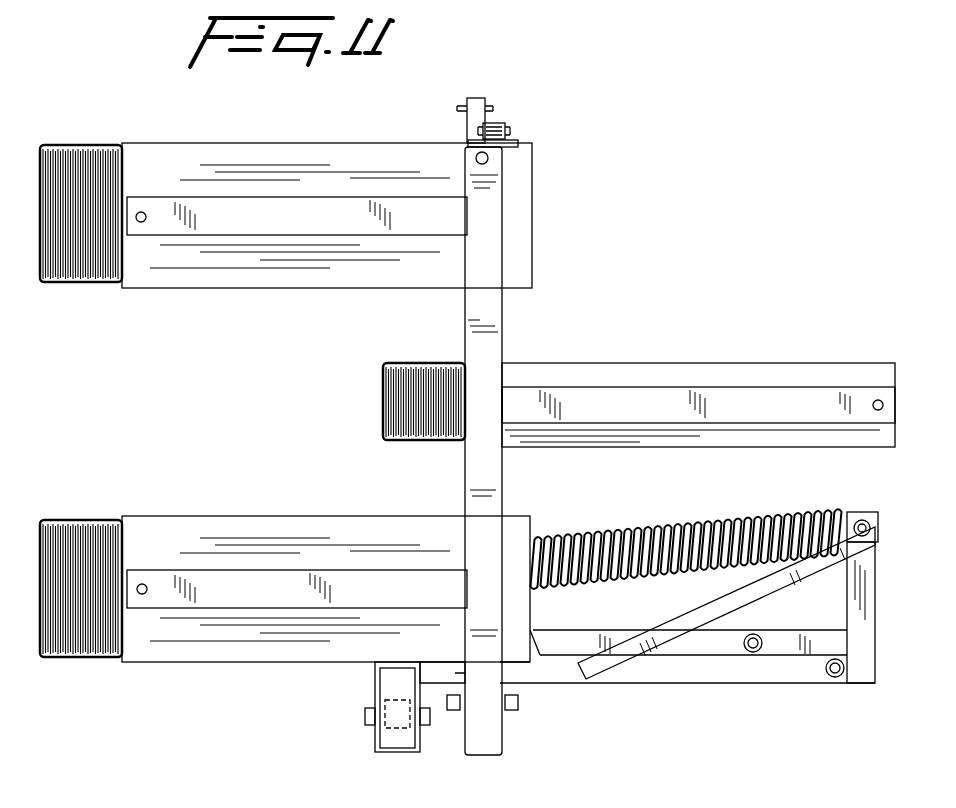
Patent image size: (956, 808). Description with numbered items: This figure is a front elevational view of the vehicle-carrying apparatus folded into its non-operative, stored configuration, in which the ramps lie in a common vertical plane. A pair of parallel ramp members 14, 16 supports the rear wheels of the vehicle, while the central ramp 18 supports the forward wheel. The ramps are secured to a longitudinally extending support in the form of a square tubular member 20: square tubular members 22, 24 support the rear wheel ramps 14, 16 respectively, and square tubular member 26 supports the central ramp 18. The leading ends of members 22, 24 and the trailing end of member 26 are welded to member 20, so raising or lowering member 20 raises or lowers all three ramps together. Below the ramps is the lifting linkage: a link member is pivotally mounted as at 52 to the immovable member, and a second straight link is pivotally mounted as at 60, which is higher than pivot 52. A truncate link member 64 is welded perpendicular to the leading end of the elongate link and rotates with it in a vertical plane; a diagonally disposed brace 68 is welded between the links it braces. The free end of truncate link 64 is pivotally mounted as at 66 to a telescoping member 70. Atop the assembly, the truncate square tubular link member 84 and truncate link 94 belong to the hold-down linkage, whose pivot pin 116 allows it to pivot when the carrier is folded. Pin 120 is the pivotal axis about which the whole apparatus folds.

The ramp member 14 is at (145, 656).
The ramp member 16 is at (155, 277).
The central ramp 18 is at (383, 398).
The square tubular member 20 is at (490, 330).
The square tubular member 22 is at (338, 203).
The square tubular member 24 is at (272, 585).
The square tubular member 26 is at (773, 392).
The pivot 52 is at (833, 680).
The pivot 60 is at (760, 652).
The truncate link member 64 is at (862, 605).
The pivot 66 is at (868, 515).
The brace 68 is at (718, 613).
The telescoping member 70 is at (740, 505).
The truncate square tubular link member 84 is at (496, 120).
The truncate link 94 is at (477, 100).
The pivot pin 116 is at (492, 104).
The pin 120 is at (365, 718).